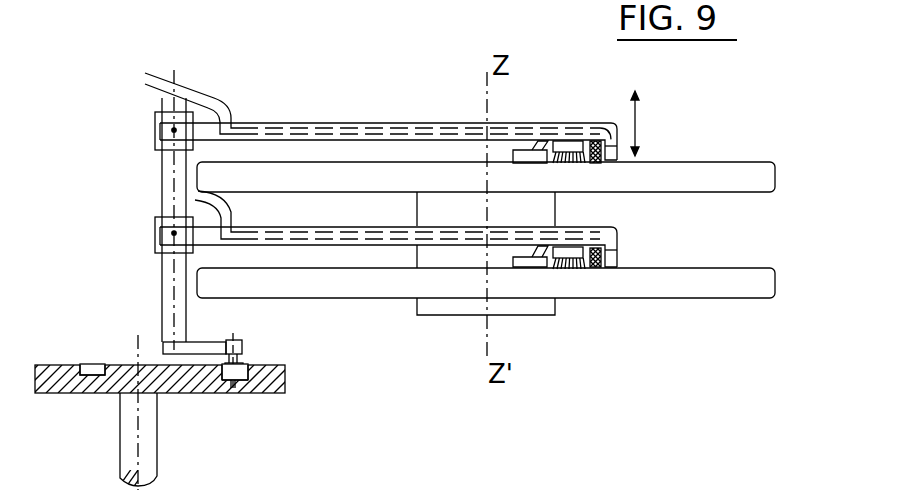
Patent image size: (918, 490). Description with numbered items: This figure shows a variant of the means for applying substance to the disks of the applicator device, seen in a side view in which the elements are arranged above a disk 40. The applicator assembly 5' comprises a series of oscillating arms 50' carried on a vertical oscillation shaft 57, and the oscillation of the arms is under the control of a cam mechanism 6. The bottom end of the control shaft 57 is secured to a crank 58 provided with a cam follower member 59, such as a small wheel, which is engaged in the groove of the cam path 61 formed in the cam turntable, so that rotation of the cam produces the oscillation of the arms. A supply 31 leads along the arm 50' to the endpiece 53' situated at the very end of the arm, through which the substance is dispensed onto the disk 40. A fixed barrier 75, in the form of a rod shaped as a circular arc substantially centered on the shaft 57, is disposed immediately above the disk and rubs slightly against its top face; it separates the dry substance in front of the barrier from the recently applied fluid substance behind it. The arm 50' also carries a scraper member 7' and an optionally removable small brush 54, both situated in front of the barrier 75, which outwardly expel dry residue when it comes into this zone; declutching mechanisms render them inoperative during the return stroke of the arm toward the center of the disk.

The fluid supply tube 31 is at (187, 88).
The brush holder assembly 5' is at (135, 182).
The oscillating arm 50' is at (388, 161).
The endpiece 53' is at (656, 168).
The disk 40 is at (760, 180).
The oscillation shaft 57 is at (165, 300).
The crank 58 is at (207, 343).
The cam follower member 59 is at (232, 388).
The cam path 61 is at (93, 367).
The cam mechanism 6 is at (100, 420).
The scraper member 7' is at (539, 258).
The small brush 54 is at (576, 268).
The fixed barrier 75 is at (596, 268).